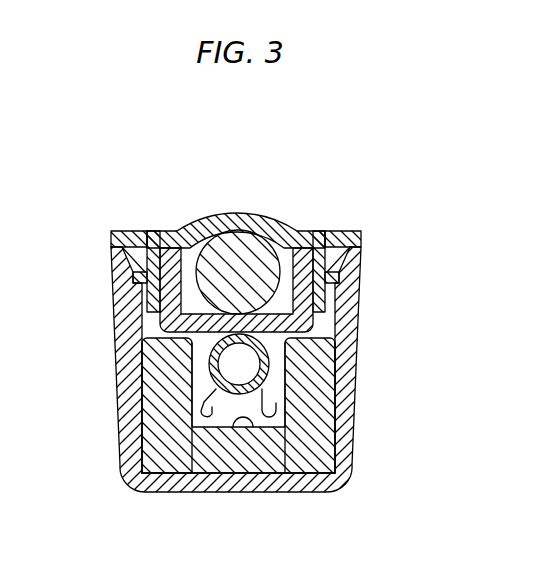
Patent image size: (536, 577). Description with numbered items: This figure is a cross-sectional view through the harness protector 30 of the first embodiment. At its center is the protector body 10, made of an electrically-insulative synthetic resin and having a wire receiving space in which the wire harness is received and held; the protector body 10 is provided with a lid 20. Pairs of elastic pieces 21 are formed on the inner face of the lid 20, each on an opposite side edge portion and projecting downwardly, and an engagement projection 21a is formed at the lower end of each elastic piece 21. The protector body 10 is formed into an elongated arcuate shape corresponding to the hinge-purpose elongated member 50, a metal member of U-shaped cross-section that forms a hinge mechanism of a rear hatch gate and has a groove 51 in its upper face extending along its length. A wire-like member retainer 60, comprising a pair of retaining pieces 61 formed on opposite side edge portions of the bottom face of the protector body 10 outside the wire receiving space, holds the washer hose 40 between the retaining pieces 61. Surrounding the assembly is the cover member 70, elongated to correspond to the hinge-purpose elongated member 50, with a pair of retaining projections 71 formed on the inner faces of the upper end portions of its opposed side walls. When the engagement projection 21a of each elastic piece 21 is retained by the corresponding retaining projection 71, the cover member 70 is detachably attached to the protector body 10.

The protector body 10 is at (183, 264).
The lid 20 is at (244, 232).
The elastic piece 21 is at (244, 242).
The engagement projection 21a is at (139, 286).
The harness protector 30 is at (244, 329).
The washer hose 40 is at (210, 372).
The hinge-purpose elongated member 50 is at (292, 478).
The groove 51 is at (255, 430).
The wire-like member retainer 60 is at (218, 433).
The retaining piece 61 is at (190, 355).
The cover member 70 is at (121, 458).
The retaining projection 71 is at (146, 272).